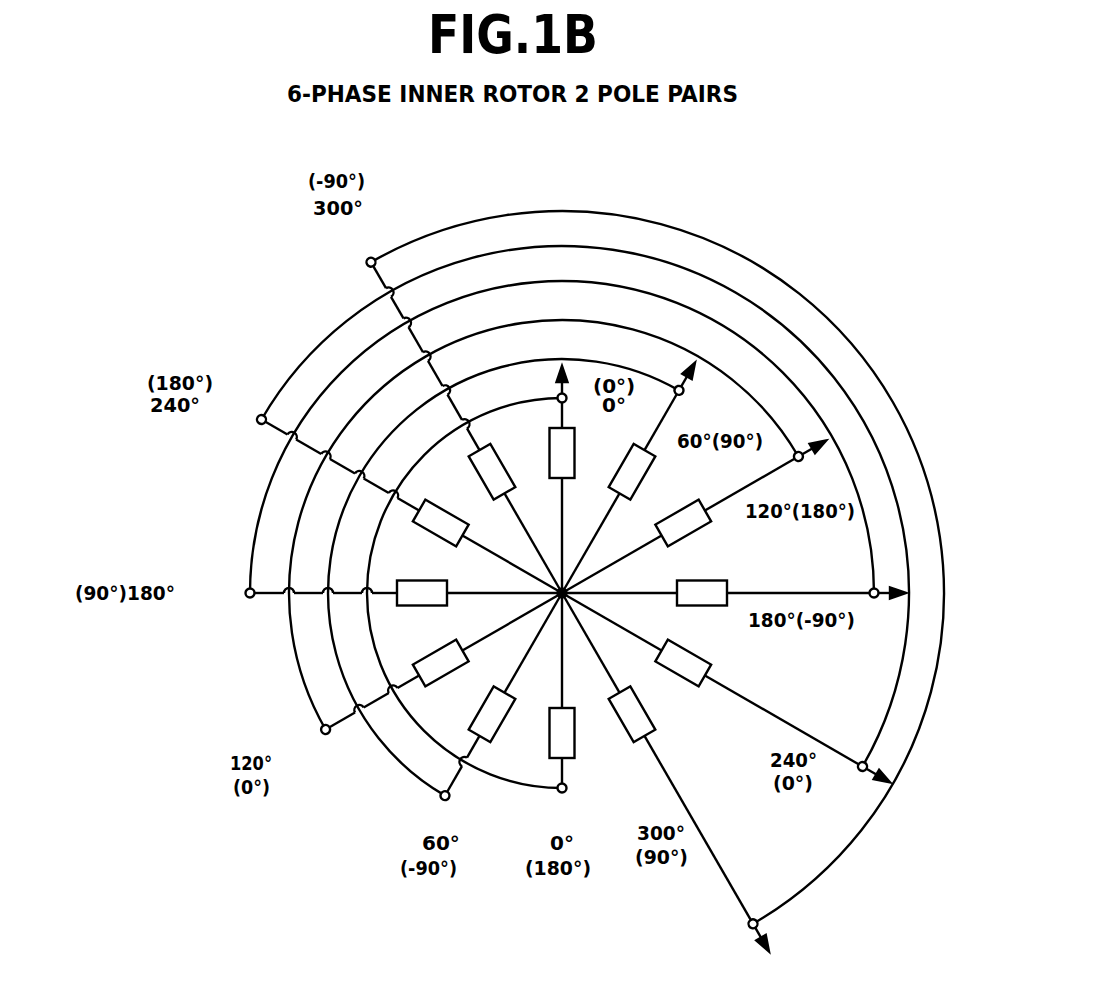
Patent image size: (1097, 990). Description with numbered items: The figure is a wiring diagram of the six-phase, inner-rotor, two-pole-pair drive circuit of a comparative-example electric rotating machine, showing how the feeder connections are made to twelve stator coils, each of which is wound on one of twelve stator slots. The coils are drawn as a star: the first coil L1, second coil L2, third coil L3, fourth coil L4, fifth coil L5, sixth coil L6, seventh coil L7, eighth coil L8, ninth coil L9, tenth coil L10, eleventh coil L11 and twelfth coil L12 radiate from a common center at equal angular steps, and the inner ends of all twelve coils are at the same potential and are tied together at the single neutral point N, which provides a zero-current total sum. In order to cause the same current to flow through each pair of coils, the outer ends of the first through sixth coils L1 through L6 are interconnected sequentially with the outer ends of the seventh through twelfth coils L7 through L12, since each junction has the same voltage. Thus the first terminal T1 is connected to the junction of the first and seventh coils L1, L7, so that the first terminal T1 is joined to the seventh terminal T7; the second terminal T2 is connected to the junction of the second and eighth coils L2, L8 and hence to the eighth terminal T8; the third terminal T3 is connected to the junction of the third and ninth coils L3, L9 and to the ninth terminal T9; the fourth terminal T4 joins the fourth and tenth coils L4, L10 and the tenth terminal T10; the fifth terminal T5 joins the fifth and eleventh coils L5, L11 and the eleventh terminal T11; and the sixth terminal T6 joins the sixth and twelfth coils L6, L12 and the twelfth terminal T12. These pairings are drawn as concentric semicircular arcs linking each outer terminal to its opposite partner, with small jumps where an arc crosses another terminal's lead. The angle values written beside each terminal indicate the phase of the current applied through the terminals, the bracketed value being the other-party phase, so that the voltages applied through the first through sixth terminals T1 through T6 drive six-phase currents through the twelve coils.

The first coil L1 is at (579, 453).
The second coil L2 is at (644, 473).
The third coil L3 is at (687, 532).
The fourth coil L4 is at (702, 610).
The fifth coil L5 is at (683, 674).
The sixth coil L6 is at (626, 719).
The seventh coil L7 is at (547, 733).
The eighth coil L8 is at (481, 714).
The ninth coil L9 is at (439, 657).
The tenth coil L10 is at (422, 582).
The eleventh coil L11 is at (442, 515).
The twelfth coil L12 is at (502, 472).
The first terminal T1 is at (577, 397).
The second terminal T2 is at (676, 406).
The third terminal T3 is at (765, 476).
The fourth terminal T4 is at (816, 612).
The fifth terminal T5 is at (797, 733).
The sixth terminal T6 is at (707, 843).
The seventh terminal T7 is at (561, 795).
The eighth terminal T8 is at (450, 782).
The ninth terminal T9 is at (347, 709).
The tenth terminal T10 is at (292, 594).
The eleventh terminal T11 is at (309, 463).
The twelfth terminal T12 is at (407, 340).
The neutral point N is at (562, 593).